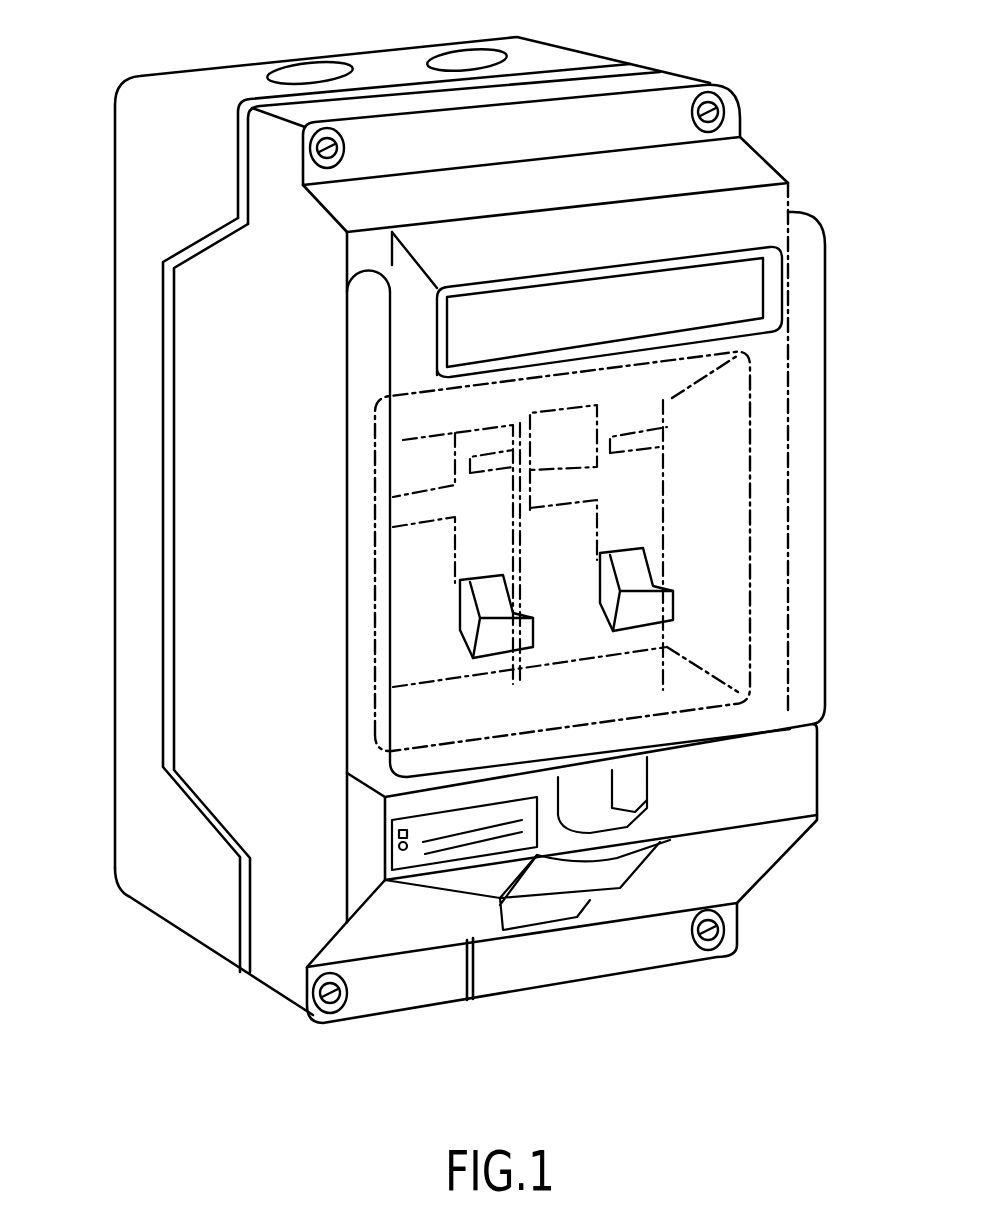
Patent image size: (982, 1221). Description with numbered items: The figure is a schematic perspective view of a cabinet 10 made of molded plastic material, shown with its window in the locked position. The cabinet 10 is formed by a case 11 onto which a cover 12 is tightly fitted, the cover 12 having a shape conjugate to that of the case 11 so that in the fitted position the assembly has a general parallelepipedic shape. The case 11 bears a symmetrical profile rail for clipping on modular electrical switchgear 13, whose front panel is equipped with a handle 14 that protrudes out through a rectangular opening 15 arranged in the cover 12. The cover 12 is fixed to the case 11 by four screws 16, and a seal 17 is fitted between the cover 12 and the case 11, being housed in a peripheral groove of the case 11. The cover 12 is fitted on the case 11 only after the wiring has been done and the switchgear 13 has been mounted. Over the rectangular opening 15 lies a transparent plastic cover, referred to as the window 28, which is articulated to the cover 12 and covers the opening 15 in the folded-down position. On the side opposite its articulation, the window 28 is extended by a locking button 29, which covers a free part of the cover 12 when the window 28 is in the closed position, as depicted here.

The cabinet 10 is at (810, 123).
The case 11 is at (128, 122).
The cover 12 is at (662, 107).
The modular electrical switchgear 13 is at (640, 521).
The handle 14 is at (652, 605).
The rectangular opening 15 is at (660, 437).
The screws 16 is at (708, 950).
The seal 17 is at (238, 845).
The window 28 is at (403, 421).
The locking button 29 is at (797, 775).